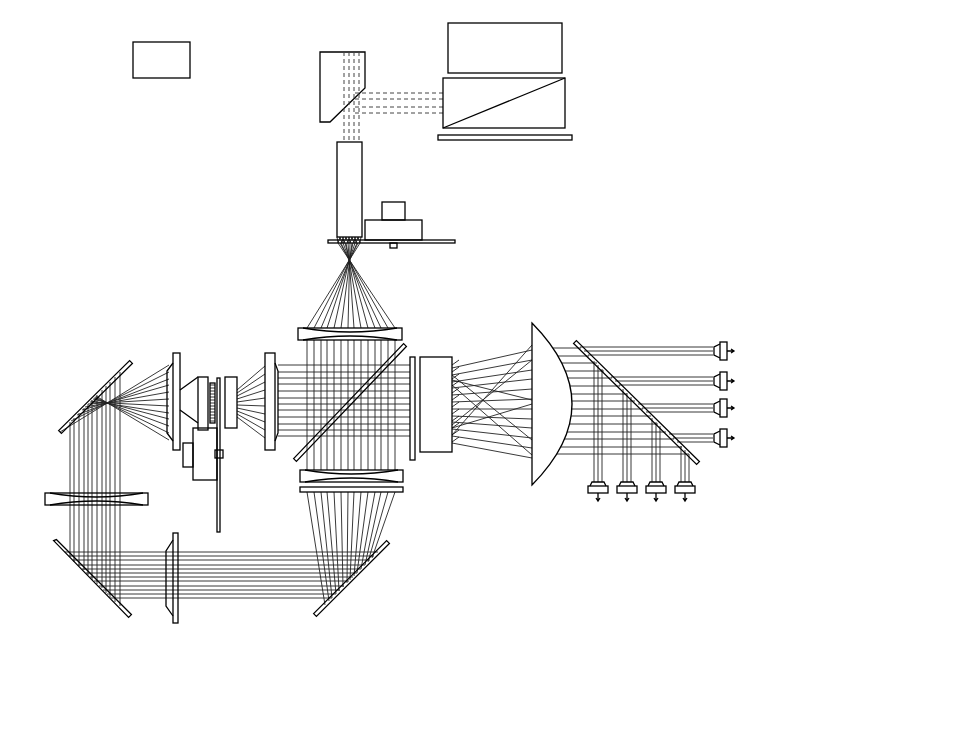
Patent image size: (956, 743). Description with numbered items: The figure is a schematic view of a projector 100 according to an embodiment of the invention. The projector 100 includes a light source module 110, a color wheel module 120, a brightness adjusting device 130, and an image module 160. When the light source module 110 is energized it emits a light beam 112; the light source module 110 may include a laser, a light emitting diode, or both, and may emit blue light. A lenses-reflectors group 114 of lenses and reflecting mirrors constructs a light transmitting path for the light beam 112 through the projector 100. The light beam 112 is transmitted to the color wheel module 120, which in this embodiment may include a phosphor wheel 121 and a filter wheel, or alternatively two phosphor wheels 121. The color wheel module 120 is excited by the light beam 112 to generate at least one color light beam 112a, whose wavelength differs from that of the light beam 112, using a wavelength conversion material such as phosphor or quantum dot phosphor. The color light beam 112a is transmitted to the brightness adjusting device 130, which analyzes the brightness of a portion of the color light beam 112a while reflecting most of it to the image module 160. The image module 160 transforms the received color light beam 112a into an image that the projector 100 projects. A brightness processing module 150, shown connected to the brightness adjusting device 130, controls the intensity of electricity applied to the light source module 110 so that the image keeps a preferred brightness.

The projector 100 is at (68, 138).
The light source module 110 is at (738, 335).
The light beam 112 is at (573, 462).
The color light beam 112a is at (343, 126).
The lenses-reflectors group 114 is at (84, 367).
The color wheel module 120 is at (286, 337).
The phosphor wheel 121 is at (378, 231).
The brightness adjusting device 130 is at (365, 62).
The brightness processing module 150 is at (327, 52).
The image module 160 is at (573, 73).